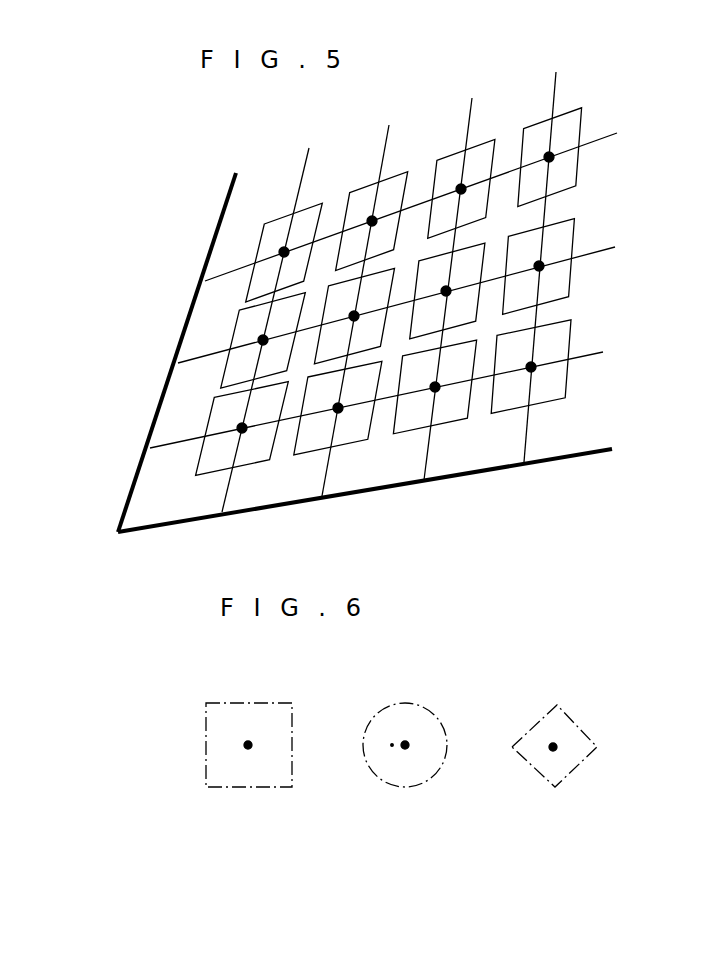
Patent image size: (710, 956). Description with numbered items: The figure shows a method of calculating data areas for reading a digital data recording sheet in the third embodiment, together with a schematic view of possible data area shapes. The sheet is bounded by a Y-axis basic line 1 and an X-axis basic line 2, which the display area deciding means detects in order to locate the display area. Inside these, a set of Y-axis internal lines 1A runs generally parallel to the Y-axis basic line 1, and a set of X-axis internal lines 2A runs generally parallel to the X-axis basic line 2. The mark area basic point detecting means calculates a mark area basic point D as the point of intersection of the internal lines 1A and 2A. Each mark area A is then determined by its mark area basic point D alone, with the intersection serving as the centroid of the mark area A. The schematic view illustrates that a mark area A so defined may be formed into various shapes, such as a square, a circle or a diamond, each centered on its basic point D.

In FIG. 5, the Y-axis basic line 1 is at (188, 320).
In FIG. 5, the X-axis basic line 2 is at (470, 477).
In FIG. 5, the Y-axis internal lines 1A is at (546, 240).
In FIG. 5, the X-axis internal lines 2A is at (592, 250).
In FIG. 5, the mark area A is at (530, 125).
In FIG. 6, the mark area A is at (278, 718).
In FIG. 5, the mark area basic point D is at (556, 152).
In FIG. 6, the mark area basic point D is at (248, 745).